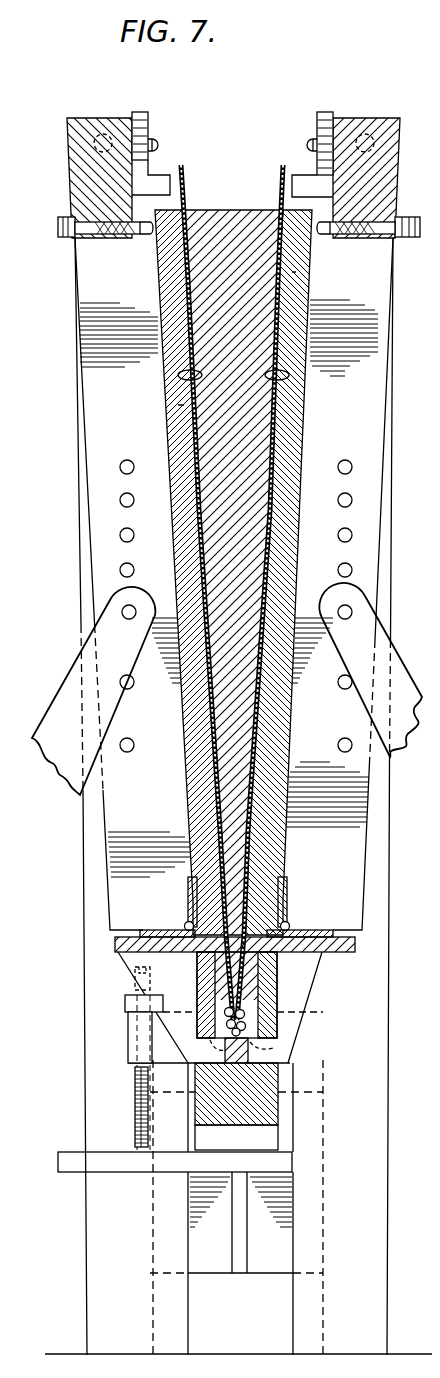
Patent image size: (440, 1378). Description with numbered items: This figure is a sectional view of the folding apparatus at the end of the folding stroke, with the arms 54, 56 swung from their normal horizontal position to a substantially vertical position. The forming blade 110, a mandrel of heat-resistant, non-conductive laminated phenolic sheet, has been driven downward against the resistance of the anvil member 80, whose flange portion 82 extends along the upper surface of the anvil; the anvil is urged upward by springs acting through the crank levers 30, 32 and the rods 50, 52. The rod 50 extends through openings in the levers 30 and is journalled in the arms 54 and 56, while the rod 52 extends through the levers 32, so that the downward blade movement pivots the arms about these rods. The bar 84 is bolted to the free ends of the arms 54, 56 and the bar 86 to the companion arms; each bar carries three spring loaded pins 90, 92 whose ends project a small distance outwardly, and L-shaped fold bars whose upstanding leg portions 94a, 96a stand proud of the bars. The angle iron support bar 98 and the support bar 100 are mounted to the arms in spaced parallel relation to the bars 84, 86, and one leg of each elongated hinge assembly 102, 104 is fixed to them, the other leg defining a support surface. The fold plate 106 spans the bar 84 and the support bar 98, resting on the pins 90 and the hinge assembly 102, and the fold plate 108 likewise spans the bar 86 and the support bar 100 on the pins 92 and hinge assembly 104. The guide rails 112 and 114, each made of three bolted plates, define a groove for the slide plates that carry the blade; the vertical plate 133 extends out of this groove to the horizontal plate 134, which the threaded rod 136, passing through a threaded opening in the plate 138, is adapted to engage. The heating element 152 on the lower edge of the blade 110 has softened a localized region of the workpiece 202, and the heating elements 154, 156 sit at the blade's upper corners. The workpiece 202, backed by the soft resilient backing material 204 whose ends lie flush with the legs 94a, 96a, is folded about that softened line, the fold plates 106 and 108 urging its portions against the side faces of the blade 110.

The crank lever 30 is at (60, 697).
The crank lever 32 is at (398, 670).
The rod 50 is at (121, 612).
The rod 52 is at (352, 610).
The arm 54 is at (83, 424).
The arm 56 is at (372, 462).
The anvil member 80 is at (267, 1113).
The flange portion 82 is at (249, 1052).
The bar 84 is at (88, 184).
The bar 86 is at (349, 184).
The spring loaded pin 90 is at (145, 238).
The spring loaded pin 92 is at (320, 237).
The upstanding leg portion 94a is at (147, 117).
The upstanding leg portion 96a is at (323, 113).
The angle iron support bar 98 is at (135, 947).
The support bar 100 is at (314, 990).
The hinge assembly 102 is at (188, 900).
The hinge assembly 104 is at (288, 898).
The fold plate 106 is at (172, 447).
The fold plate 108 is at (302, 433).
The forming blade 110 is at (217, 431).
The guide rail 112 is at (100, 1055).
The guide rail 114 is at (362, 1247).
The vertical plate 133 is at (251, 1263).
The horizontal plate 134 is at (265, 1162).
The threaded rod 136 is at (137, 1112).
The plate 138 is at (128, 1027).
The heating element 152 is at (263, 990).
The heating element 154 is at (186, 212).
The heating element 156 is at (278, 207).
The workpiece 202 is at (178, 380).
The backing material 204 is at (178, 405).